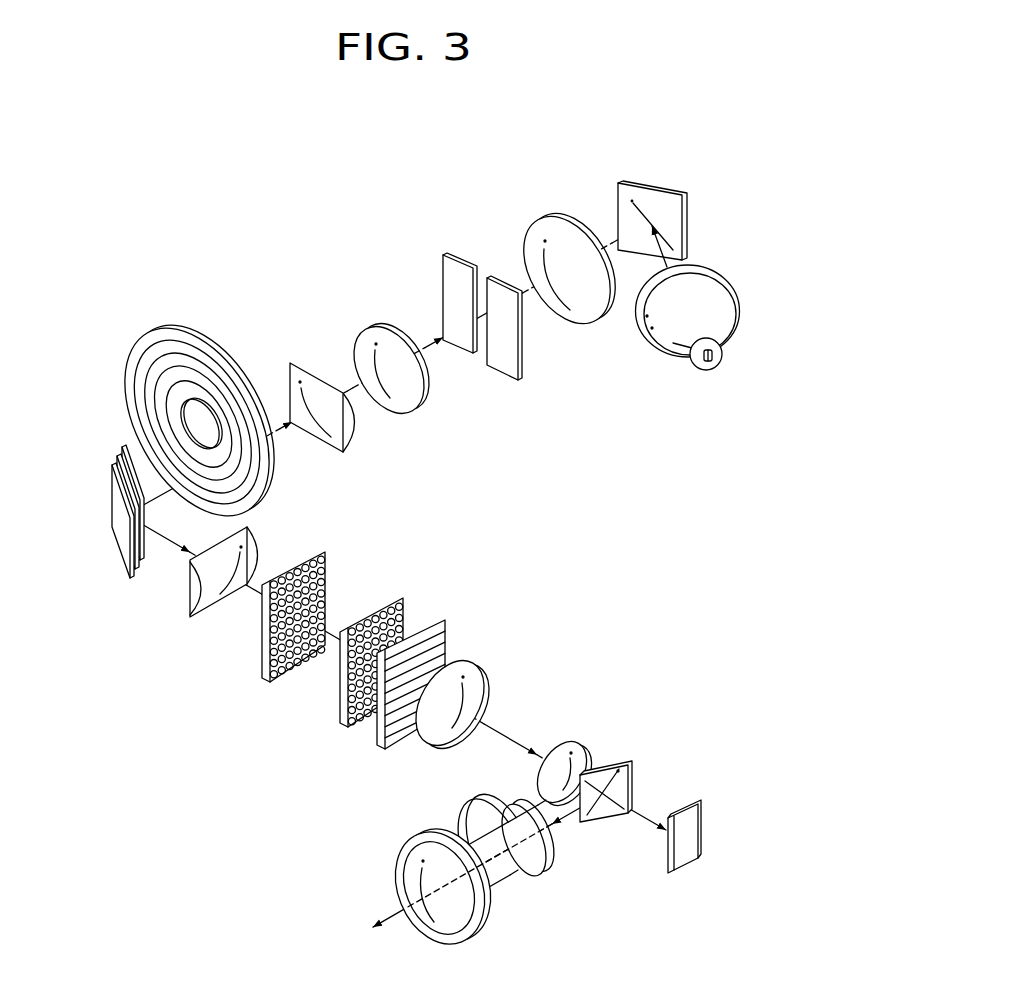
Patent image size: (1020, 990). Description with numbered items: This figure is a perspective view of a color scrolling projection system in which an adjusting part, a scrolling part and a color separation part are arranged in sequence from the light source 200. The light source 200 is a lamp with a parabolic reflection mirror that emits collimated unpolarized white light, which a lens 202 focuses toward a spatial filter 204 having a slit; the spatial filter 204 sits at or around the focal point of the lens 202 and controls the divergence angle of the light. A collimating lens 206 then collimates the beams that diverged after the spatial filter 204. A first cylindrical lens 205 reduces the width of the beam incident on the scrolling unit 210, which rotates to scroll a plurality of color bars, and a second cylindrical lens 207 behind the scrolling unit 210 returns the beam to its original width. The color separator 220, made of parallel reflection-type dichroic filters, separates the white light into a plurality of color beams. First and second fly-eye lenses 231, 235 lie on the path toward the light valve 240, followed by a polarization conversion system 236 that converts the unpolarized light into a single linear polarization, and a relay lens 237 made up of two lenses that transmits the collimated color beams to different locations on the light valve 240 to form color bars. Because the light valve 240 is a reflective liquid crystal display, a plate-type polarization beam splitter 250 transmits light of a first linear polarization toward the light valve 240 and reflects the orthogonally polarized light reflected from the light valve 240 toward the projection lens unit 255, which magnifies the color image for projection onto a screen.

The light source 200 is at (719, 258).
The lens 202 is at (560, 217).
The spatial filter 204 is at (469, 253).
The first cylindrical lens 205 is at (312, 368).
The collimating lens 206 is at (390, 330).
The second cylindrical lens 207 is at (193, 598).
The scrolling unit 210 is at (188, 322).
The color separator 220 is at (107, 452).
The first fly-eye lens 231 is at (302, 560).
The second fly-eye lens 235 is at (380, 607).
The polarization conversion system 236 is at (432, 615).
The relay lens 237 is at (482, 688).
The light valve 240 is at (690, 803).
The polarization beam splitter 250 is at (617, 767).
The projection lens unit 255 is at (530, 900).